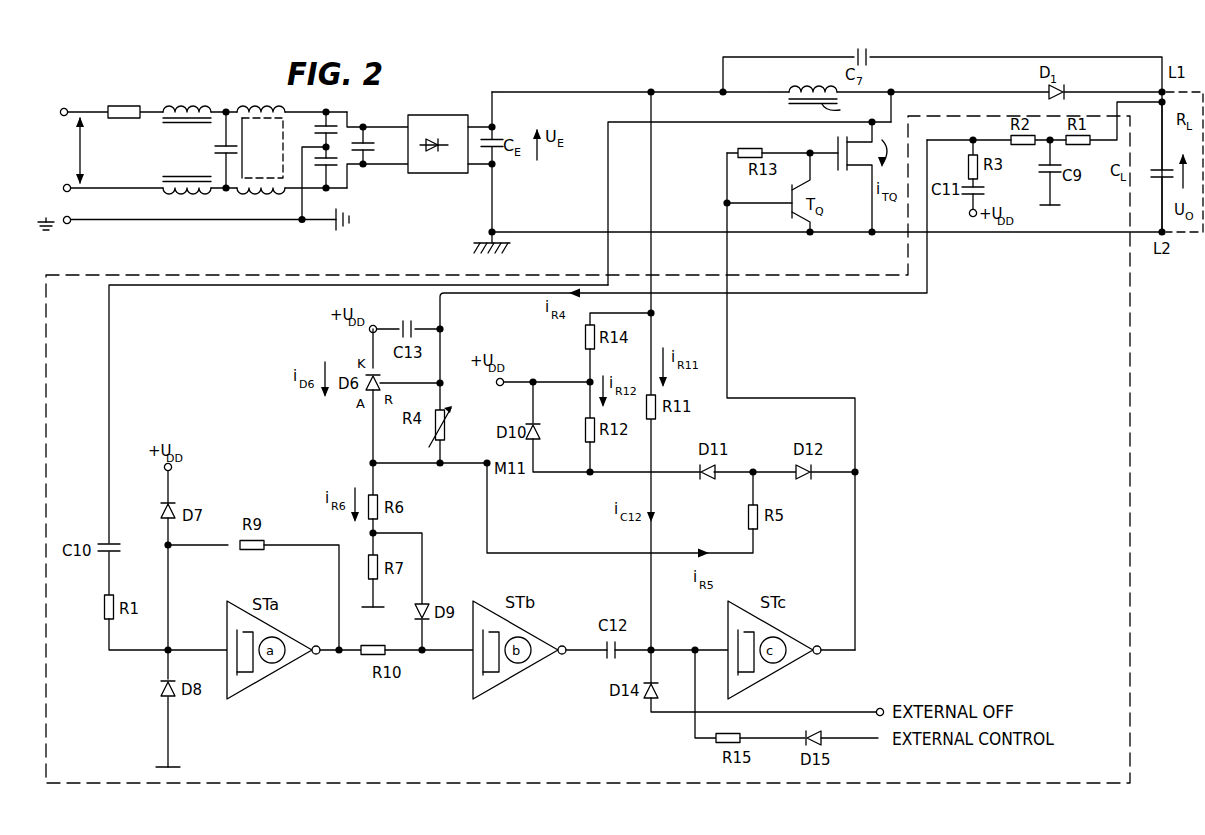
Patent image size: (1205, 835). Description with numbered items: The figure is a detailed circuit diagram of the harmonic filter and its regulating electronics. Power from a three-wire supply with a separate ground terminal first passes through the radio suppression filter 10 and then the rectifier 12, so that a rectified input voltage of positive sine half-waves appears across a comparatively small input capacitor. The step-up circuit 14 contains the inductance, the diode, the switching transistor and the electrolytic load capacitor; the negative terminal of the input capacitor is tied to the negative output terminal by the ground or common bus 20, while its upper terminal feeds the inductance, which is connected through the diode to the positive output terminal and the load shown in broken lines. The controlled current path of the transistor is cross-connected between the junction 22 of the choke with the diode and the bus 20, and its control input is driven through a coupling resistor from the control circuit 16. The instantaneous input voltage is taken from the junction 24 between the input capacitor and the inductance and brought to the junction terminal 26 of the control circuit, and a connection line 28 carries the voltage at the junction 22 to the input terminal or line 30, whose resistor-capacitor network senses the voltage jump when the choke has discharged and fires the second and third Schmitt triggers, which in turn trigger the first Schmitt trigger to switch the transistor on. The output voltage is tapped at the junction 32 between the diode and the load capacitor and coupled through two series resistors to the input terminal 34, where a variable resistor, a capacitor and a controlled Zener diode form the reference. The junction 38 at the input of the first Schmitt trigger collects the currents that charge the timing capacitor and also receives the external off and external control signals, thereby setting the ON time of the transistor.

The radio suppression filter 10 is at (150, 164).
The rectifier 12 is at (418, 173).
The step-up circuit 14 is at (743, 115).
The control circuit 16 is at (217, 356).
The ground or common bus 20 is at (657, 231).
The junction 22 is at (893, 90).
The junction 24 is at (649, 94).
The junction terminal 26 is at (654, 313).
The connection line 28 is at (607, 187).
The input terminal or line 30 is at (108, 445).
The junction 32 is at (1160, 105).
The input terminal 34 is at (443, 296).
The junction 38 is at (655, 648).